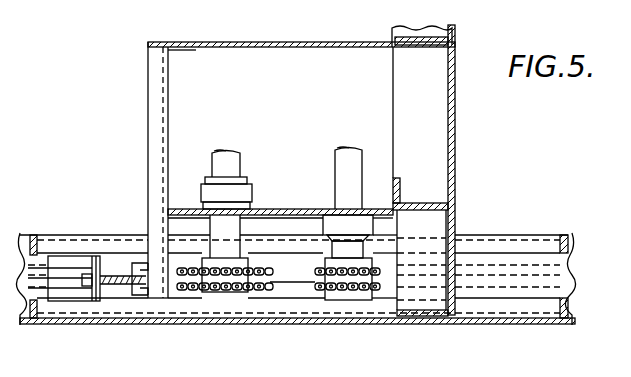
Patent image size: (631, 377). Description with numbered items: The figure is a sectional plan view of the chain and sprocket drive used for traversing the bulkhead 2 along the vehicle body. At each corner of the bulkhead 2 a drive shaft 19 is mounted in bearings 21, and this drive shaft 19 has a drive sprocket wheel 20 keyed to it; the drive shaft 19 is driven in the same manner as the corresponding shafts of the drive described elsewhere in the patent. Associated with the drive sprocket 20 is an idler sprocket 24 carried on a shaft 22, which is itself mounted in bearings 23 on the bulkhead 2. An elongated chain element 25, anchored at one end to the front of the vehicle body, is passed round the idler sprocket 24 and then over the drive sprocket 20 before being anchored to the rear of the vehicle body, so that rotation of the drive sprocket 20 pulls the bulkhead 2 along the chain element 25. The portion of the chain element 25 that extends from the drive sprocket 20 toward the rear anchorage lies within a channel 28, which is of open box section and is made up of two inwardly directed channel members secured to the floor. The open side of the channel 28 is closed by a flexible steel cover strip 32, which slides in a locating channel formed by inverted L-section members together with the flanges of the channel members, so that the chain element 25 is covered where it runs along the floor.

The bulkhead 2 is at (455, 98).
The drive shaft 19 is at (240, 158).
The drive sprocket wheel 20 is at (257, 292).
The bearings 21 is at (245, 182).
The shaft 22 is at (352, 152).
The bearings 23 is at (362, 208).
The idler sprocket 24 is at (330, 297).
The chain element 25 is at (122, 292).
The channel 28 is at (512, 232).
The cover strip 32 is at (539, 258).